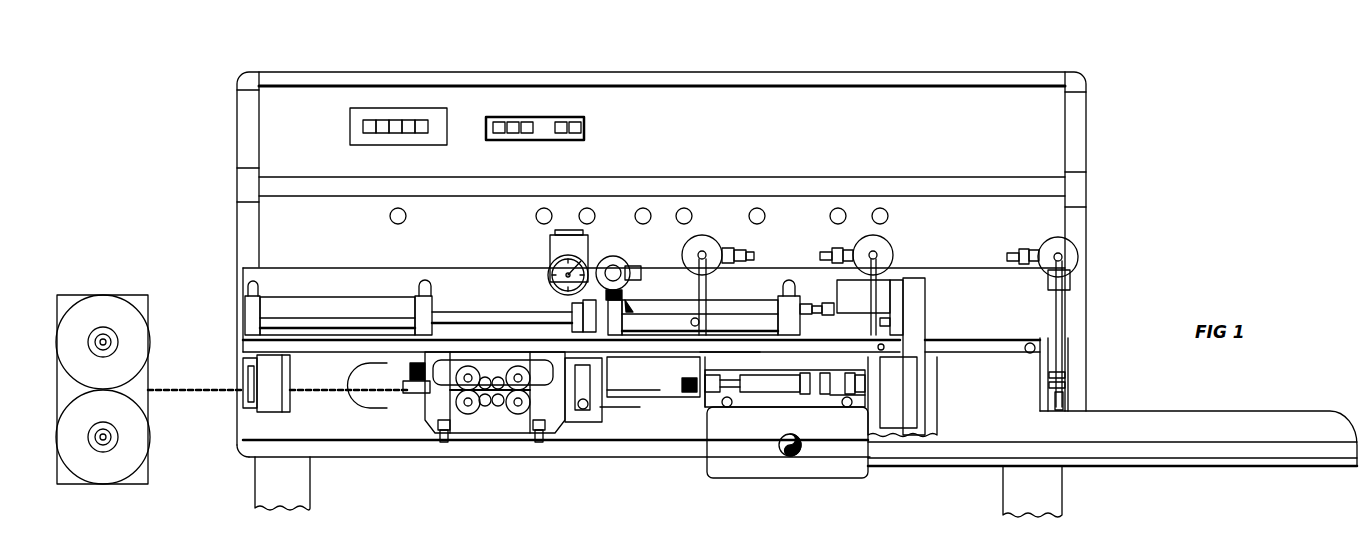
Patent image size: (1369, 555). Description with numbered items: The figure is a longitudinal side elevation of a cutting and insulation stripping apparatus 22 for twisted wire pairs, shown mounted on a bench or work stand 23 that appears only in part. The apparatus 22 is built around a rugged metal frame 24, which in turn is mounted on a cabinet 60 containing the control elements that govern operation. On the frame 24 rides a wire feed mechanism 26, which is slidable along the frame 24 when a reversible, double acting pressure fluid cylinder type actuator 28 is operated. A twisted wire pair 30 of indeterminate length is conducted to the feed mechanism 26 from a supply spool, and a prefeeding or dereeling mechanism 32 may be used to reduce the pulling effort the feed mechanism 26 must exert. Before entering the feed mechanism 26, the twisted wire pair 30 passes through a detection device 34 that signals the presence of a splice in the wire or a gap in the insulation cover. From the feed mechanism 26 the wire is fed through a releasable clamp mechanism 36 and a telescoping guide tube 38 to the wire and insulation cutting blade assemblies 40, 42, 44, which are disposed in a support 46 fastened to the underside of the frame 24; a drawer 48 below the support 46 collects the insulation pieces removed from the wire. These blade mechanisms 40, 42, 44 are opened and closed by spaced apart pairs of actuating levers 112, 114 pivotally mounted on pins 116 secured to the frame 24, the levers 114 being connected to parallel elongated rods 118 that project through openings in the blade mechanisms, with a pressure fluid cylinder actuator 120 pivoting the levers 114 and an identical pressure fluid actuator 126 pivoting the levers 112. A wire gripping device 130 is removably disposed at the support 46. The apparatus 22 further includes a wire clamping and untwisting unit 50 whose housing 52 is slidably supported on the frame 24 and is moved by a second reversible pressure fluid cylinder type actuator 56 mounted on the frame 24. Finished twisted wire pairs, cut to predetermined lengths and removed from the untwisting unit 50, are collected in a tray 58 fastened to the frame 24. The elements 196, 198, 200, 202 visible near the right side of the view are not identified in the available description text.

The cutting and insulation stripping apparatus 22 is at (1096, 190).
The bench or work stand 23 is at (1064, 488).
The frame 24 is at (246, 345).
The wire feed mechanism 26 is at (482, 430).
The pressure fluid cylinder type actuator 28 is at (346, 300).
The twisted wire pair 30 is at (337, 396).
The prefeeding or dereeling mechanism 32 is at (143, 454).
The detection device 34 is at (262, 403).
The releasable clamp mechanism 36 is at (600, 412).
The telescoping guide tube 38 is at (668, 393).
The wire and insulation cutting blade assembly 40 is at (844, 405).
The wire and insulation cutting blade assembly 42 is at (801, 352).
The wire and insulation cutting blade assembly 44 is at (855, 350).
The support 46 is at (746, 344).
The drawer 48 is at (747, 478).
The wire clamping and untwisting unit 50 is at (926, 425).
The housing 52 is at (905, 380).
The second reversible pressure fluid cylinder type actuator 56 is at (755, 305).
The tray 58 is at (1214, 412).
The cabinet 60 is at (1088, 120).
The actuating lever 112 is at (872, 300).
The actuating lever 114 is at (699, 290).
The pin 116 is at (693, 321).
The elongated rod 118 is at (733, 407).
The pressure fluid cylinder actuator 120 is at (681, 252).
The pressure fluid actuator 126 is at (893, 252).
The wire gripping device 130 is at (839, 392).
The support bar 196 is at (918, 315).
The rod 198 is at (1066, 298).
The clamp 200 is at (1068, 343).
The handwheel 202 is at (1081, 258).